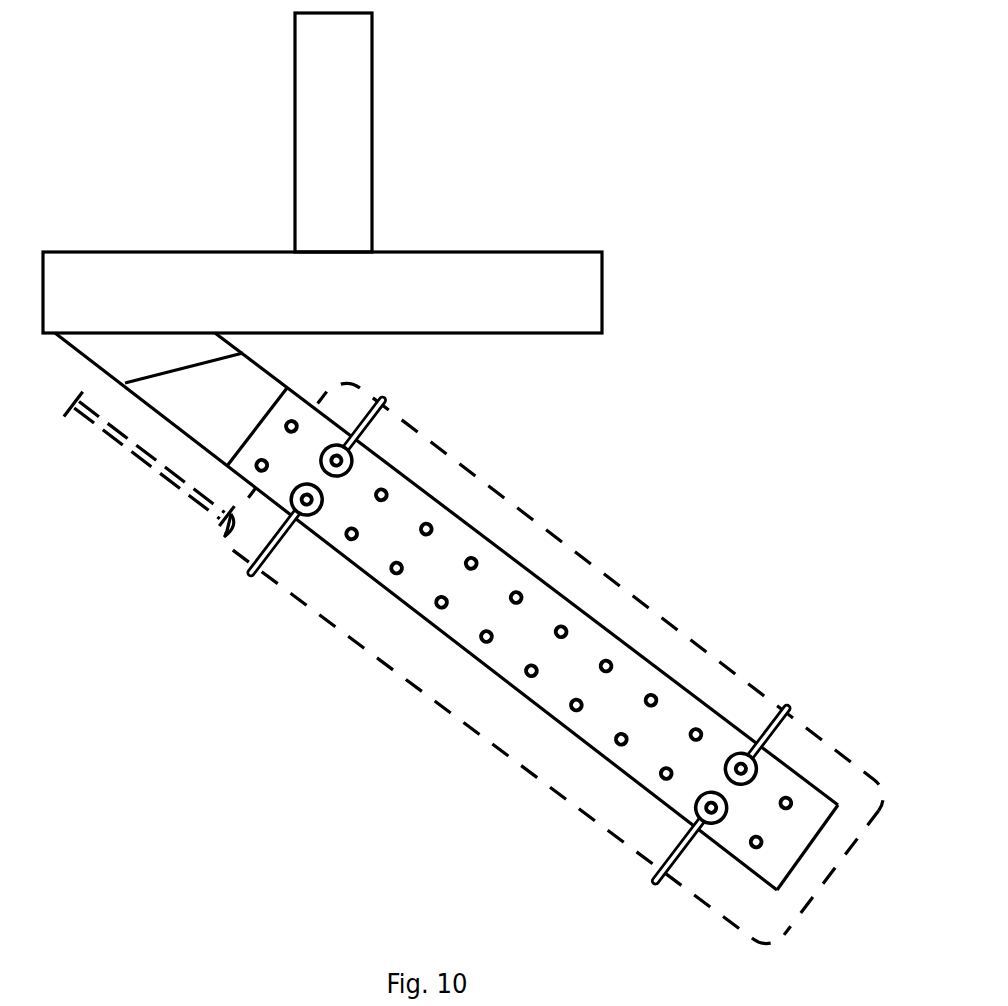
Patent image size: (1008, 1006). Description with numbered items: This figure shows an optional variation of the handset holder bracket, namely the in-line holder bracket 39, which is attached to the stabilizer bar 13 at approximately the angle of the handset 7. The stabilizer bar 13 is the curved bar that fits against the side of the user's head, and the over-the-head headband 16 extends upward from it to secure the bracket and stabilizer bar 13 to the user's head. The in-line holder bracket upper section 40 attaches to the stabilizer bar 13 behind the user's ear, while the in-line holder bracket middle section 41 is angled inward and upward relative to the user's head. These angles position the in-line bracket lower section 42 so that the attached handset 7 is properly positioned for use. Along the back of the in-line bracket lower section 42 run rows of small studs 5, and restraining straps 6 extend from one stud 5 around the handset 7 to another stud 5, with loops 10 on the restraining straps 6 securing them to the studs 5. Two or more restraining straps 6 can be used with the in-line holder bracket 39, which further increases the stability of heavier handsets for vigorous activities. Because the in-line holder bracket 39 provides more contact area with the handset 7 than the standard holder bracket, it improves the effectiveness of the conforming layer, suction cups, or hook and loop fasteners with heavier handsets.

The studs 5 is at (568, 627).
The restraining strap 6 is at (373, 422).
The handset 7 is at (652, 638).
The loops 10 is at (350, 465).
The stabilizer bar 13 is at (517, 290).
The over-the-head headband 16 is at (352, 185).
The in-line holder bracket 39 is at (245, 355).
The in-line holder bracket upper section 40 is at (113, 360).
The in-line holder bracket middle section 41 is at (170, 403).
The in-line bracket lower section 42 is at (472, 627).